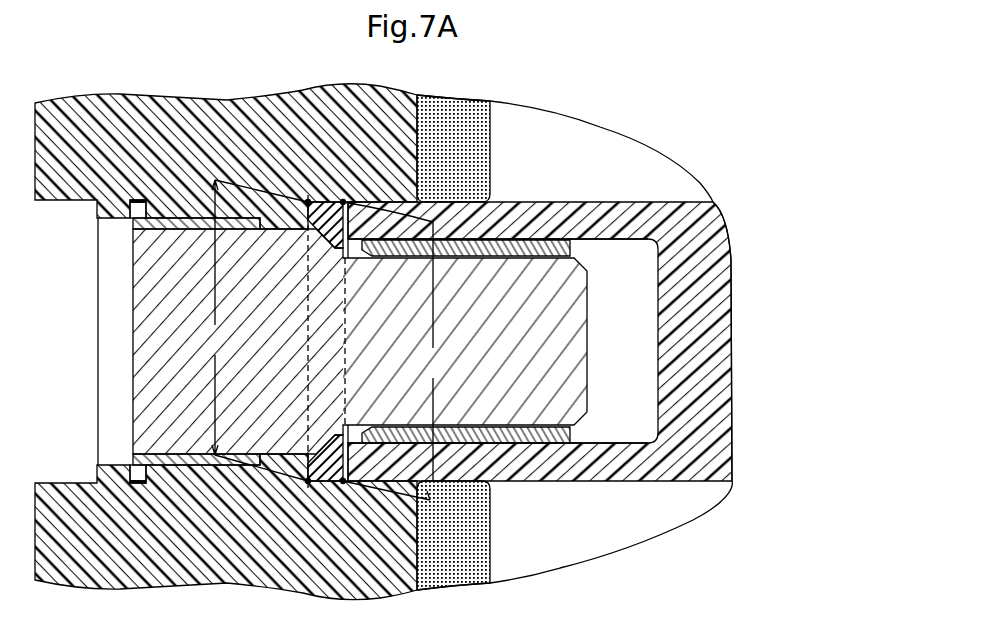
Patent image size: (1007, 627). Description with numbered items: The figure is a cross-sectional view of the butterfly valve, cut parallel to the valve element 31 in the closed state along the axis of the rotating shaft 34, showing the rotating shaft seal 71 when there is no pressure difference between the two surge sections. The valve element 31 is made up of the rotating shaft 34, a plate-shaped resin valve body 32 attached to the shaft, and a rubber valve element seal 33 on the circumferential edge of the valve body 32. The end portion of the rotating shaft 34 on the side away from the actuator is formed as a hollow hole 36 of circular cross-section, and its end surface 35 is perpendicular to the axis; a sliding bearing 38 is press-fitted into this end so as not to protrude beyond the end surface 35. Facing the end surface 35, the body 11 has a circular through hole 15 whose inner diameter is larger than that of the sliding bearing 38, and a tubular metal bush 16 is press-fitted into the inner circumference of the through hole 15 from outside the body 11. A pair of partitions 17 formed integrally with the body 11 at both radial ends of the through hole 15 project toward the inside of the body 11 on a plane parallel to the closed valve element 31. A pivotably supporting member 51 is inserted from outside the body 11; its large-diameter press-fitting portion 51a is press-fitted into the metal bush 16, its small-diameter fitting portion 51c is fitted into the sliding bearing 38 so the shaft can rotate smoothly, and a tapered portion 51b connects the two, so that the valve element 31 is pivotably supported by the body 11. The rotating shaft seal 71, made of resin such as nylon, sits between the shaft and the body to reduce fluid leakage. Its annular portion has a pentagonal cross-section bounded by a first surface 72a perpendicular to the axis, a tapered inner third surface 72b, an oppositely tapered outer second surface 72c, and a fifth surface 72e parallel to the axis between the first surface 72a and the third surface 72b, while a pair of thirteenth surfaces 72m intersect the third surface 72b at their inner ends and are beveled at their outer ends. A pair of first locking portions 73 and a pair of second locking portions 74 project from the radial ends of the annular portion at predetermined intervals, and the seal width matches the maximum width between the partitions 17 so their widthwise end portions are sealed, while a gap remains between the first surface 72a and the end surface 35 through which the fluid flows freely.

The body 11 is at (214, 105).
The through hole 15 is at (114, 300).
The metal bush 16 is at (147, 200).
The partitions 17 is at (293, 233).
The valve element 31 is at (616, 118).
The valve body 32 is at (556, 120).
The valve element seal 33 is at (453, 102).
The rotating shaft 34 is at (737, 328).
The end surface 35 is at (316, 200).
The hollow hole 36 is at (650, 367).
The sliding bearing 38 is at (513, 238).
The pivotably supporting member 51 is at (126, 369).
The press-fitting portion 51a is at (147, 275).
The tapered portion 51b is at (346, 484).
The fitting portion 51c is at (522, 440).
The rotating shaft seal 71 is at (307, 200).
The first surface 72a is at (354, 232).
The third surface 72b is at (345, 425).
The second surface 72c is at (308, 484).
The fifth surface 72e is at (346, 262).
The thirteenth surfaces 72m is at (308, 263).
The first locking portions 73 is at (284, 197).
The second locking portions 74 is at (283, 479).